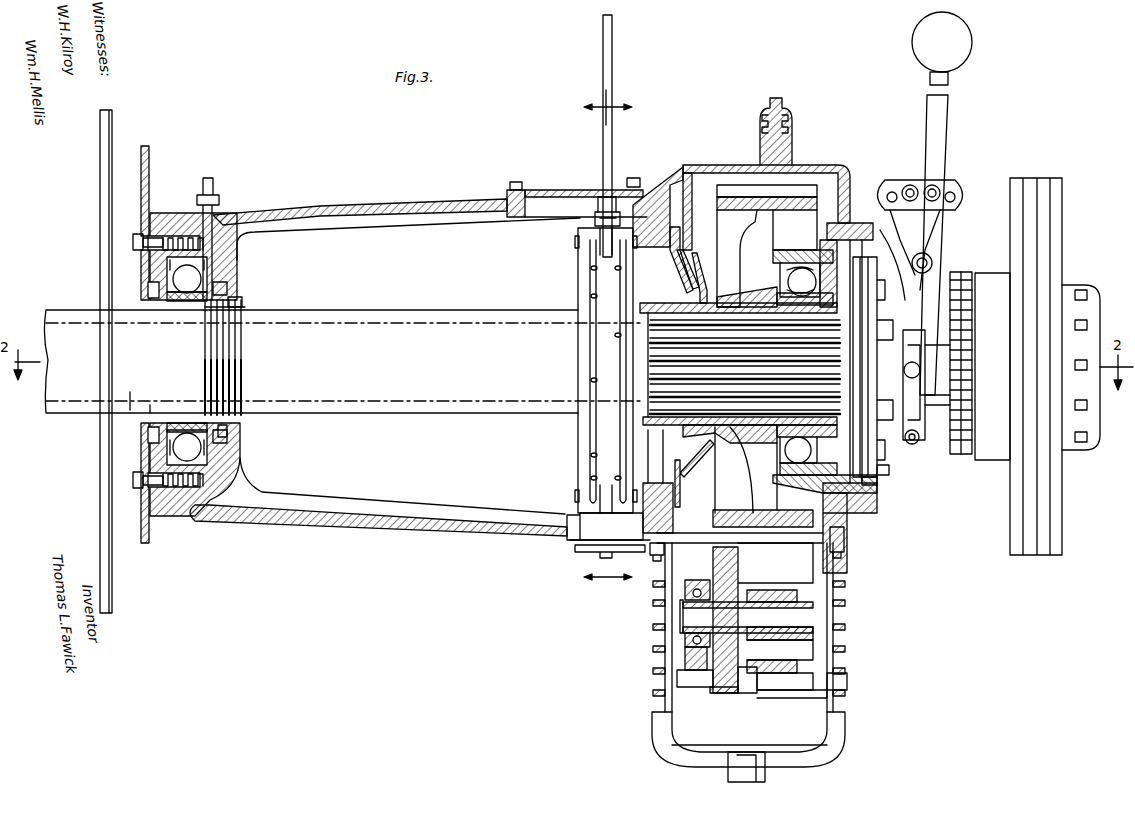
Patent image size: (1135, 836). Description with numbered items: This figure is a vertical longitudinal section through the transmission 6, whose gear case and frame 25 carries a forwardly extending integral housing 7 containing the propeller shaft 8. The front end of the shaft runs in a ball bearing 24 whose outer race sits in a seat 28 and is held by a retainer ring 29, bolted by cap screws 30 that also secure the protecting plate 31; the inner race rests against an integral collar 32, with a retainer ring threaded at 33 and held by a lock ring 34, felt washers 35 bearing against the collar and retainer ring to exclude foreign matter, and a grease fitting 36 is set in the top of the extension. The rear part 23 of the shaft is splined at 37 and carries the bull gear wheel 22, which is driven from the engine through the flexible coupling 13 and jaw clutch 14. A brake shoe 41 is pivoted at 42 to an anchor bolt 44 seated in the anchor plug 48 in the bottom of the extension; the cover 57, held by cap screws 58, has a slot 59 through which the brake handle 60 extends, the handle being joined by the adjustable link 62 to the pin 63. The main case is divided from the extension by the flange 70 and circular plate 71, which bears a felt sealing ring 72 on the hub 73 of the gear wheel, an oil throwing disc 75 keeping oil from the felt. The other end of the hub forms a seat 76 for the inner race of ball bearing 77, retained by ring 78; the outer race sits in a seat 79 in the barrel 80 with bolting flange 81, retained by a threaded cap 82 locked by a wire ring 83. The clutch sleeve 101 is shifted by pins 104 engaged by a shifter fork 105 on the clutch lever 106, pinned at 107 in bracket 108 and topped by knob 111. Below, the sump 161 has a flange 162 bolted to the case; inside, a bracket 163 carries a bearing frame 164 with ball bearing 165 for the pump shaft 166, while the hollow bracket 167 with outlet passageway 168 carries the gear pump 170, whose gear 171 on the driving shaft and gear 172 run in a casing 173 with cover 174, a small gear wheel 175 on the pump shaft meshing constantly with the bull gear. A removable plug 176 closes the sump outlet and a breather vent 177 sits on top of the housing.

The transmission 6 is at (613, 342).
The housing 7 is at (338, 208).
The propeller shaft 8 is at (130, 392).
The flexible coupling 13 is at (1042, 188).
The jaw clutch 14 is at (980, 160).
The bull gear wheel 22 is at (758, 268).
The propeller shaft rear part 23 is at (374, 395).
The ball bearing 24 is at (190, 278).
The gear case and frame 25 is at (690, 167).
The seat 28 is at (218, 470).
The retainer ring 29 is at (165, 236).
The cap screws 30 is at (133, 242).
The plate 31 is at (147, 146).
The collar 32 is at (158, 407).
The retainer ring thread 33 is at (228, 287).
The lock ring 34 is at (242, 302).
The seal 35 is at (155, 300).
The fitting 36 is at (218, 196).
The splines 37 is at (605, 374).
The brake shoe 41 is at (578, 272).
The pivot 42 is at (576, 495).
The brake shoe anchor bolt 44 is at (576, 532).
The brake shoe anchor plug 48 is at (650, 543).
The cover 57 is at (518, 182).
The cap screws 58 is at (632, 178).
The slot 59 is at (602, 190).
The brake handle 60 is at (603, 48).
The adjustable link 62 is at (598, 212).
The pin 63 is at (575, 241).
The flange 70 is at (680, 235).
The circular plate 71 is at (686, 258).
The felt sealing ring 72 is at (690, 470).
The hub 73 is at (722, 430).
The oil throwing disc 75 is at (698, 268).
The seat 76 is at (772, 300).
The ball bearing 77 is at (790, 450).
The retaining ring 78 is at (807, 450).
The seat 79 is at (800, 480).
The barrel 80 is at (800, 253).
The bolting flange 81 is at (866, 225).
The threaded cap 82 is at (880, 460).
The wire ring 83 is at (878, 477).
The clutch sleeve 101 is at (940, 300).
The shifting pins 104 is at (915, 370).
The shifter fork 105 is at (930, 330).
The clutch lever 106 is at (938, 118).
The pin 107 is at (942, 262).
The bracket 108 is at (900, 275).
The knob 111 is at (960, 48).
The sump 161 is at (848, 636).
The flange 162 is at (848, 553).
The bracket 163 is at (680, 681).
The bearing frame 164 is at (688, 656).
The ball bearing 165 is at (690, 638).
The pump shaft 166 is at (690, 616).
The bracket 167 is at (830, 697).
The outlet passageway 168 is at (848, 684).
The gear pump 170 is at (770, 590).
The gear 171 is at (799, 594).
The gear 172 is at (799, 665).
The casing 173 is at (773, 690).
The cover 174 is at (747, 692).
The small gear wheel 175 is at (712, 692).
The plug 176 is at (768, 778).
The breather vent 177 is at (783, 116).